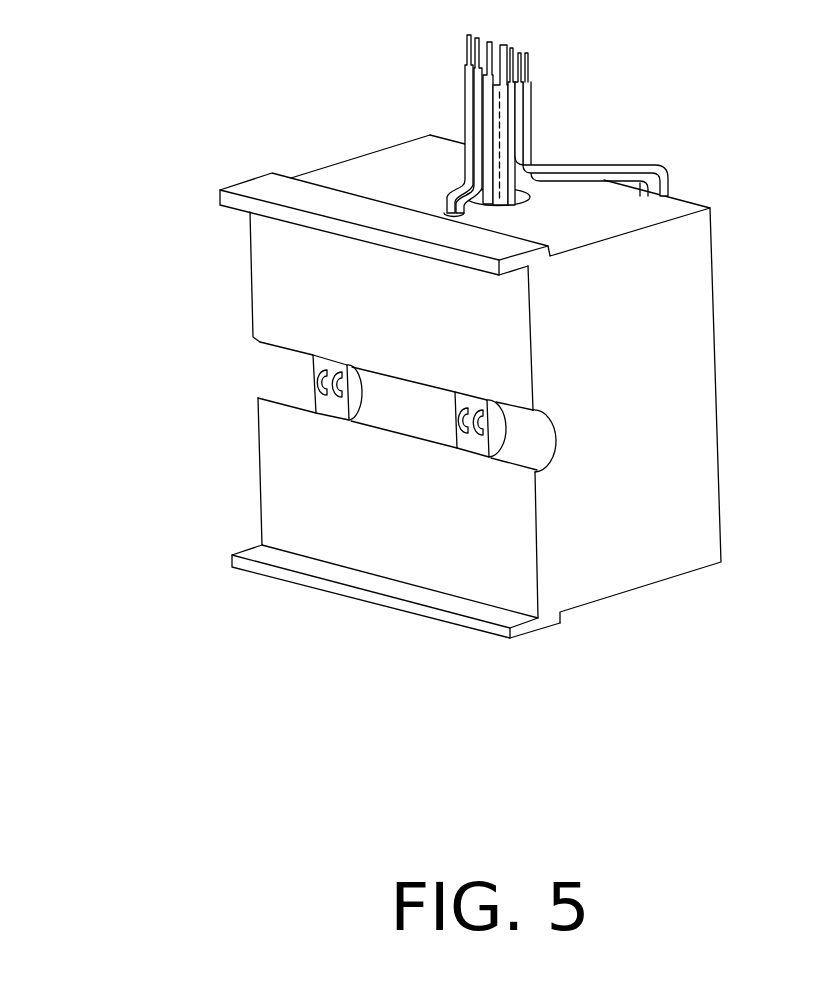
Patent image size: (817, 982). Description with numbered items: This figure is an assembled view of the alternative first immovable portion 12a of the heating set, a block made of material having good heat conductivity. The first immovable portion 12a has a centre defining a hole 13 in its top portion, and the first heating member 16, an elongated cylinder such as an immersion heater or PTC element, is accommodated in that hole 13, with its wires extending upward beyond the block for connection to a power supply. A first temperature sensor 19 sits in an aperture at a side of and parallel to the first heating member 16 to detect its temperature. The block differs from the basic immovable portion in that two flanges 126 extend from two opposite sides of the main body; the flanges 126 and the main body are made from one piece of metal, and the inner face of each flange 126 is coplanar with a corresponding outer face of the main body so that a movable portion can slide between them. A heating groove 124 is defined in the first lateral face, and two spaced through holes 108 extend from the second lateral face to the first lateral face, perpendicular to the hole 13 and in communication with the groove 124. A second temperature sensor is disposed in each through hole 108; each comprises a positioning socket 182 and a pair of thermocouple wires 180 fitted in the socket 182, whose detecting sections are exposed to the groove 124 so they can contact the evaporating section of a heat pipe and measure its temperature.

The first immovable portion 12a is at (350, 128).
The first temperature sensor 19 is at (468, 126).
The first heating member 16 is at (503, 120).
The thermocouple wires 180 is at (601, 170).
The hole 13 is at (524, 198).
The flanges 126 is at (253, 190).
The heating groove 124 is at (297, 388).
The positioning socket 182 is at (328, 406).
The through holes 108 is at (535, 470).